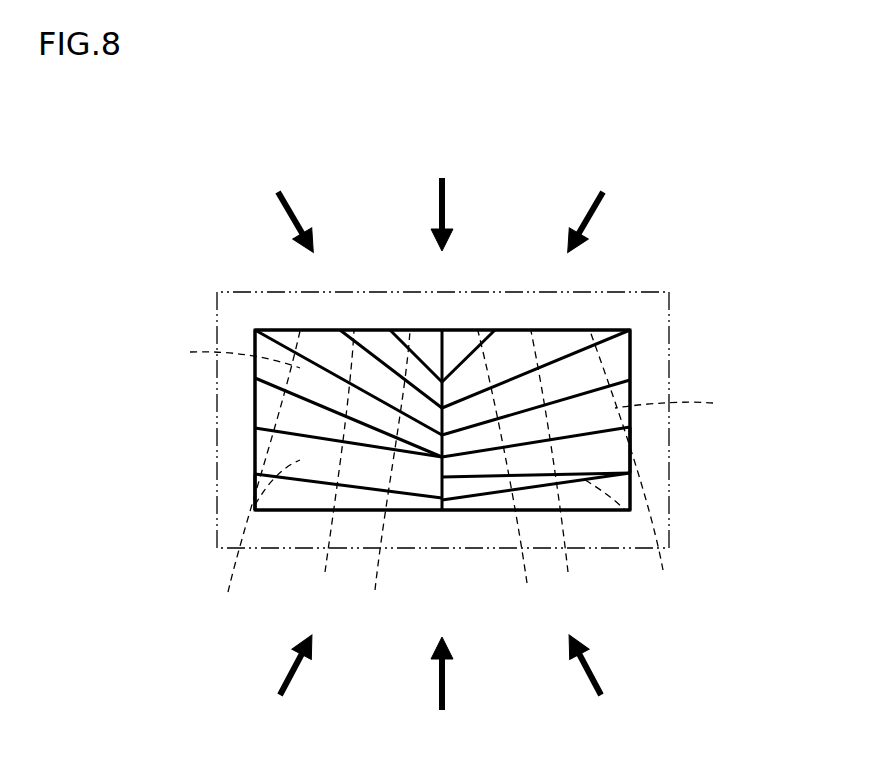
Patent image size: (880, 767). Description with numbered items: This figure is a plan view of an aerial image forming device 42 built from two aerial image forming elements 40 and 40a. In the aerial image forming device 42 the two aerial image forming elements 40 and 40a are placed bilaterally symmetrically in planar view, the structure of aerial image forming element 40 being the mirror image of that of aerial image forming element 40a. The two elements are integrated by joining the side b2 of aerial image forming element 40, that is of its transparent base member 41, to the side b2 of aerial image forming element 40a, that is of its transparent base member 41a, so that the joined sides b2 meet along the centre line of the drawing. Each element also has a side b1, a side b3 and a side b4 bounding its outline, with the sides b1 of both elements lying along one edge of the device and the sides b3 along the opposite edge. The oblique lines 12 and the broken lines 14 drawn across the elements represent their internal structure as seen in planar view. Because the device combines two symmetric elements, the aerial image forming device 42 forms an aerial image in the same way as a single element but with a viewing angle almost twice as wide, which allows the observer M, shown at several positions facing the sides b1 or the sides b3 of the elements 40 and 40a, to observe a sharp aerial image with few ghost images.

The rib / bend line 12 is at (283, 332).
The magnetic flux line 14 is at (450, 479).
The aerial image forming element 40 is at (248, 323).
The aerial image forming element 40a is at (650, 317).
The transparent base member 41 is at (253, 433).
The transparent base member 41a is at (632, 463).
The aerial image forming device 42 is at (683, 377).
The side b1 is at (283, 510).
The side b2 is at (442, 465).
The side b3 is at (325, 332).
The side boundary b4 is at (256, 487).
The observer M is at (440, 443).